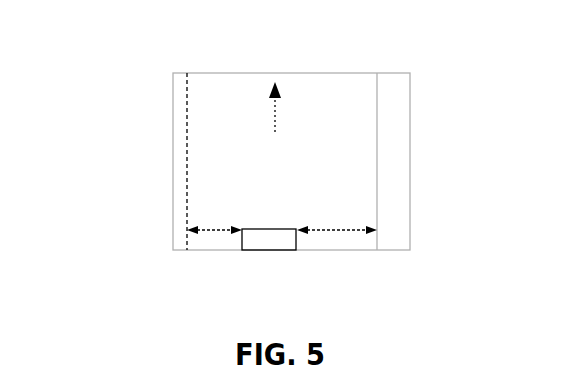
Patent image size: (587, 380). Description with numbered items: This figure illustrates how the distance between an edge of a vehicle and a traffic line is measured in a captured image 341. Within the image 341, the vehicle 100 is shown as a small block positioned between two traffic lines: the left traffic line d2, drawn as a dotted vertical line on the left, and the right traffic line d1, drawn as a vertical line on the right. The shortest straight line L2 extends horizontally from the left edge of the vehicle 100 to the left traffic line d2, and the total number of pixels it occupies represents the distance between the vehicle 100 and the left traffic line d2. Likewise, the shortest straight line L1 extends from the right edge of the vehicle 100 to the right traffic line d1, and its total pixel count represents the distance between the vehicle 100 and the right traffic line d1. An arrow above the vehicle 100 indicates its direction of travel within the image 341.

The image 341 is at (332, 98).
The vehicle 100 is at (258, 238).
The right traffic line d1 is at (377, 236).
The left traffic line d2 is at (185, 183).
The shortest straight line L1 is at (337, 215).
The shortest straight line L2 is at (214, 215).